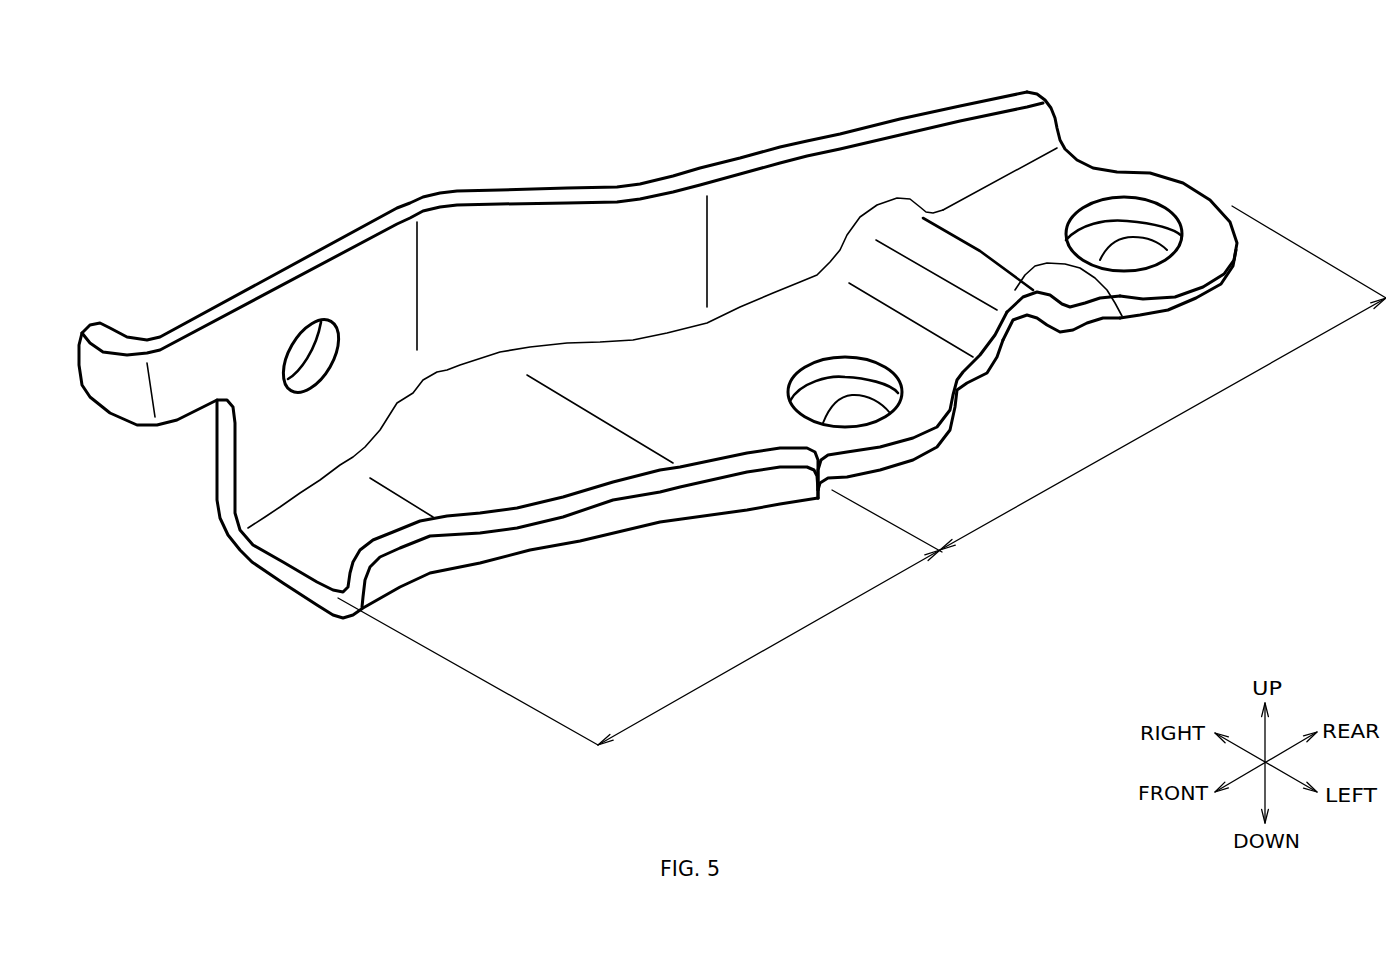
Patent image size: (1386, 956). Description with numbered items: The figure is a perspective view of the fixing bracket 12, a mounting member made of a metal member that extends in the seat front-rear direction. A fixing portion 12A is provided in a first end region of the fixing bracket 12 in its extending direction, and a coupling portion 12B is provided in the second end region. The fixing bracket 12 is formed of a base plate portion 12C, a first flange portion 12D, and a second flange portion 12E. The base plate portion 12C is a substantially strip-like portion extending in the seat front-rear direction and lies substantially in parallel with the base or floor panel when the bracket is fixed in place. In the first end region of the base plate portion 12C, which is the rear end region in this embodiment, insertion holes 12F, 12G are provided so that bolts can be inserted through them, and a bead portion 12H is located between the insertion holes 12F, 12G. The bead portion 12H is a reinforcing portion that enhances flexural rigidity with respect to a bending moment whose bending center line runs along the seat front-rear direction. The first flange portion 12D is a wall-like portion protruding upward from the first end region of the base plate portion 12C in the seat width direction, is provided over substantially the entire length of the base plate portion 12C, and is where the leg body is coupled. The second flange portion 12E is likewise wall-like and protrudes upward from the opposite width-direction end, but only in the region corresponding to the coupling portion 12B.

The fixing bracket 12 is at (732, 391).
The fixing portion 12A is at (1163, 378).
The coupling portion 12B is at (640, 617).
The base plate portion 12C is at (550, 463).
The first flange portion 12D is at (557, 237).
The second flange portion 12E is at (745, 490).
The insertion hole 12F is at (893, 417).
The insertion hole 12G is at (1160, 243).
The bead portion 12H is at (1114, 300).